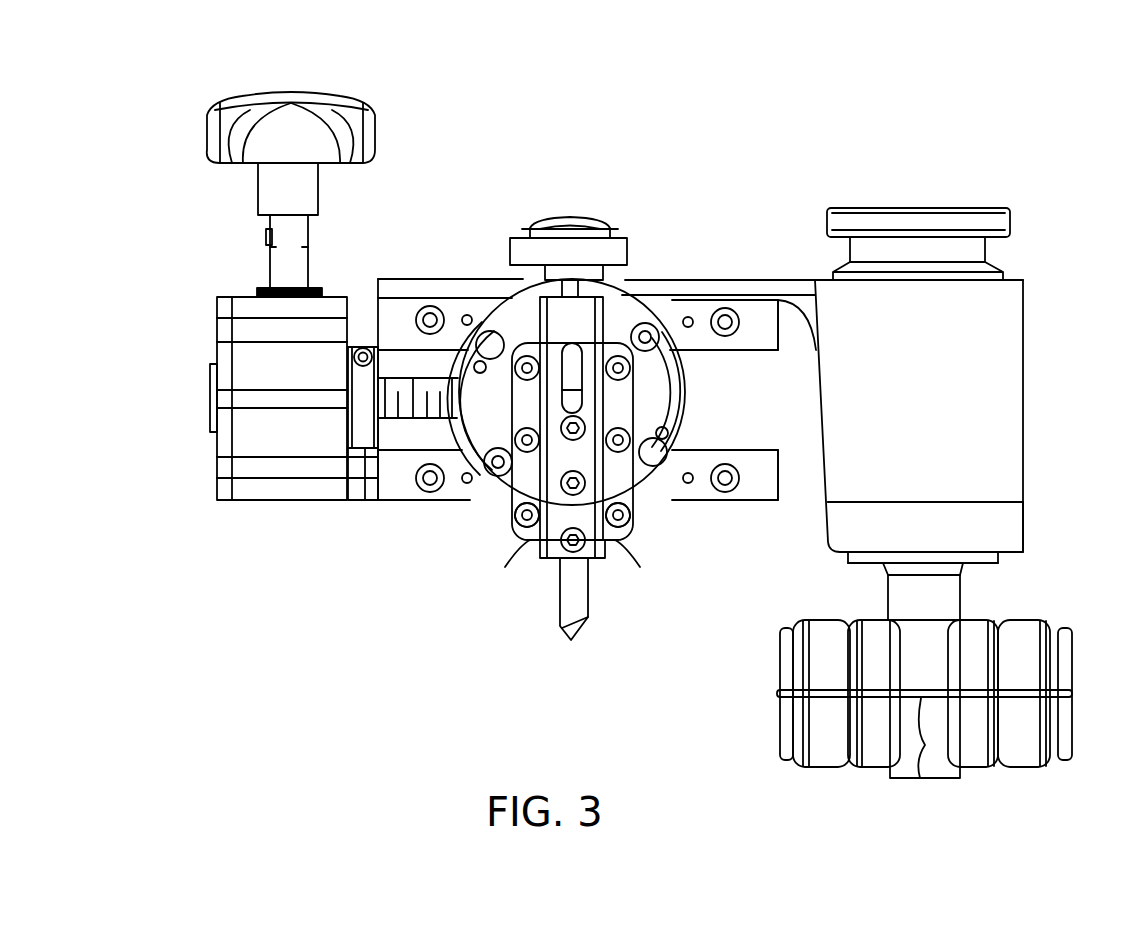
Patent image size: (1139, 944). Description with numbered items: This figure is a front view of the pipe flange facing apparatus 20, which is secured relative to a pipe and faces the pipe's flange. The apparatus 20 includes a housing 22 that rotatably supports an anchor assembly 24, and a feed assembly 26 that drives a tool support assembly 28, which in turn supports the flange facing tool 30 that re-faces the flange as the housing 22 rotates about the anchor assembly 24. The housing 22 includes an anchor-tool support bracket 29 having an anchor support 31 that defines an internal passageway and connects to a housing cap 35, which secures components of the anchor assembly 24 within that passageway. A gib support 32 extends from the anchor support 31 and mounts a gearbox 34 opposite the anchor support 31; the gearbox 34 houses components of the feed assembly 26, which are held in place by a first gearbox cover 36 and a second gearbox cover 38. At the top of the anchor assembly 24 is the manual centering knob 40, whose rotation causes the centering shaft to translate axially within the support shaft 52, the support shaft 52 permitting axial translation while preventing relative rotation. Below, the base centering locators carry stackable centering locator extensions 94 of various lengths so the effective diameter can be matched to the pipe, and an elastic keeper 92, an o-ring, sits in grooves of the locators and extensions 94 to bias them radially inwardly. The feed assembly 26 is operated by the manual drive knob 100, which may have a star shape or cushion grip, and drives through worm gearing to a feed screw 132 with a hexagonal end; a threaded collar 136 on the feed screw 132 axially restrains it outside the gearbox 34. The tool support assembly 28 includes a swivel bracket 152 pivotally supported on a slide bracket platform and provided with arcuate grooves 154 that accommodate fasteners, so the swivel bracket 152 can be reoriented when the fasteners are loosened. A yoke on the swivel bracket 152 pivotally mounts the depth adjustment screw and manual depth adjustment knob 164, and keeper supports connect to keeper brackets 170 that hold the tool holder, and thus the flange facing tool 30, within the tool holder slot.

The pipe flange facing apparatus 20 is at (718, 133).
The housing 22 is at (670, 274).
The anchor assembly 24 is at (1024, 582).
The feed assembly 26 is at (210, 262).
The tool support assembly 28 is at (490, 528).
The anchor-tool support bracket 29 is at (772, 278).
The flange facing tool 30 is at (560, 603).
The anchor support 31 is at (1030, 352).
The gib support 32 is at (425, 278).
The gearbox 34 is at (232, 325).
The housing cap 35 is at (1027, 513).
The first gearbox cover 36 is at (313, 284).
The second gearbox cover 38 is at (217, 468).
The manual centering knob 40 is at (985, 210).
The support shaft 52 is at (888, 592).
The elastic keeper 92 is at (921, 770).
The stackable centering locator extensions 94 is at (860, 770).
The manual drive knob 100 is at (372, 128).
The feed screw 132 is at (397, 425).
The threaded collar 136 is at (365, 465).
The swivel bracket 152 is at (630, 285).
The arcuate grooves 154 is at (660, 402).
The manual depth adjustment knob 164 is at (512, 250).
The keeper bracket 170 is at (530, 540).